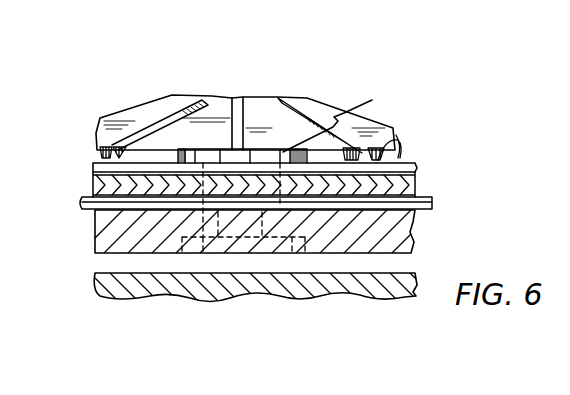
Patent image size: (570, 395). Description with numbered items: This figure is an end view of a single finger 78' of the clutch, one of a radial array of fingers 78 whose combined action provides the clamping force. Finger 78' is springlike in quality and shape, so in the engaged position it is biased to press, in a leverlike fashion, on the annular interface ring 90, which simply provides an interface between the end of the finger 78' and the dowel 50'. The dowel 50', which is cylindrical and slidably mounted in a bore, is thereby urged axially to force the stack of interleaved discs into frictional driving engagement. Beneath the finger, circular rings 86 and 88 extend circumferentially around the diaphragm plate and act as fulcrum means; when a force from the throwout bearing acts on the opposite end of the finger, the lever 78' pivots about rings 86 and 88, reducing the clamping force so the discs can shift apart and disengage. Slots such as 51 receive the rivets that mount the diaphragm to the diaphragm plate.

The finger 78 is at (245, 106).
The finger 78' is at (263, 104).
The dowel 50' is at (352, 120).
The slot 51 is at (97, 152).
The circular ring 86 is at (93, 172).
The circular ring 88 is at (430, 206).
The interface ring 90 is at (413, 182).